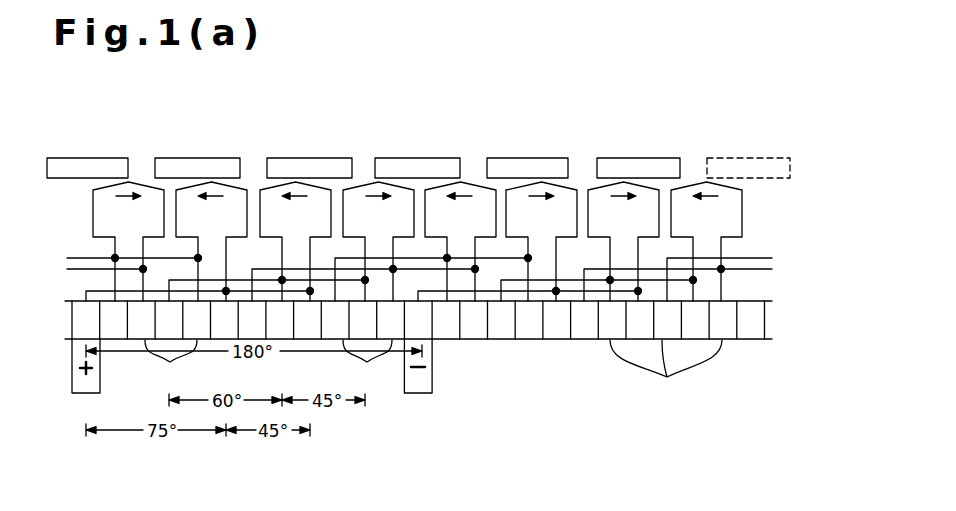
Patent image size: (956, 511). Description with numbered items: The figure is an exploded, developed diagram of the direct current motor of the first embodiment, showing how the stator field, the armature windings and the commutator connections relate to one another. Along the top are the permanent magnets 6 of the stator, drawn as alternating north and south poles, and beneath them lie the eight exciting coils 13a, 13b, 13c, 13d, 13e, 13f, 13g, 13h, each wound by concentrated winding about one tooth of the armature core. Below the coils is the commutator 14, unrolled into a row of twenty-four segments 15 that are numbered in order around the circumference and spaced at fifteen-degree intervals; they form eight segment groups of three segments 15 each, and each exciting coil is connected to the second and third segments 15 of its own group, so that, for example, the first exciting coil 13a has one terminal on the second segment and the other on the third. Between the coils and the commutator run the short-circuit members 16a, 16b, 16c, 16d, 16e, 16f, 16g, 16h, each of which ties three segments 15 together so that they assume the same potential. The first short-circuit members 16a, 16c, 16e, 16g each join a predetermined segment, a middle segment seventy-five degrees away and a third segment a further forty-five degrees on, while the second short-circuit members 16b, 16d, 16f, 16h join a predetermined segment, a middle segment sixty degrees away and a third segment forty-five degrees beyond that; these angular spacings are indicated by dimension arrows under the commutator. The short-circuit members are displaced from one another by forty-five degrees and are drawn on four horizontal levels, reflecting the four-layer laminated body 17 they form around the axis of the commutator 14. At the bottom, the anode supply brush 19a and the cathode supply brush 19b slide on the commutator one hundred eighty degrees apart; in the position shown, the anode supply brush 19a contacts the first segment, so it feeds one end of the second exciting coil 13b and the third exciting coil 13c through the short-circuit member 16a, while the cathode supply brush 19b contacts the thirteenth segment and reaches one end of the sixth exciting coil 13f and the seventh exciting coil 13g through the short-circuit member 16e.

The permanent magnet 6 is at (114, 158).
The first exciting coil 13a is at (114, 228).
The second exciting coil 13b is at (197, 228).
The third exciting coil 13c is at (281, 228).
The fourth exciting coil 13d is at (364, 228).
The fifth exciting coil 13e is at (446, 228).
The sixth exciting coil 13f is at (527, 228).
The seventh exciting coil 13g is at (609, 228).
The eighth exciting coil 13h is at (692, 228).
The commutator 14 is at (765, 321).
The segment 15 is at (433, 373).
The first short-circuit member 16a is at (107, 291).
The second short-circuit member 16b is at (187, 280).
The first short-circuit member 16c is at (271, 269).
The second short-circuit member 16d is at (354, 258).
The first short-circuit member 16e is at (439, 291).
The second short-circuit member 16f is at (519, 280).
The first short-circuit member 16g is at (600, 269).
The second short-circuit member 16h is at (684, 258).
The laminated body 17 is at (61, 253).
The anode supply brush 19a is at (87, 393).
The cathode supply brush 19b is at (422, 393).